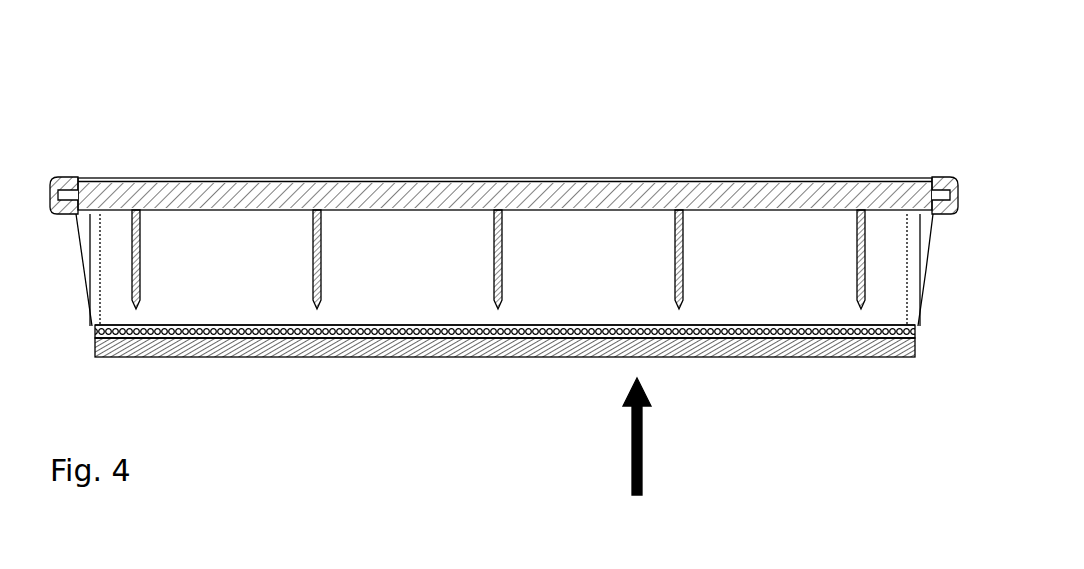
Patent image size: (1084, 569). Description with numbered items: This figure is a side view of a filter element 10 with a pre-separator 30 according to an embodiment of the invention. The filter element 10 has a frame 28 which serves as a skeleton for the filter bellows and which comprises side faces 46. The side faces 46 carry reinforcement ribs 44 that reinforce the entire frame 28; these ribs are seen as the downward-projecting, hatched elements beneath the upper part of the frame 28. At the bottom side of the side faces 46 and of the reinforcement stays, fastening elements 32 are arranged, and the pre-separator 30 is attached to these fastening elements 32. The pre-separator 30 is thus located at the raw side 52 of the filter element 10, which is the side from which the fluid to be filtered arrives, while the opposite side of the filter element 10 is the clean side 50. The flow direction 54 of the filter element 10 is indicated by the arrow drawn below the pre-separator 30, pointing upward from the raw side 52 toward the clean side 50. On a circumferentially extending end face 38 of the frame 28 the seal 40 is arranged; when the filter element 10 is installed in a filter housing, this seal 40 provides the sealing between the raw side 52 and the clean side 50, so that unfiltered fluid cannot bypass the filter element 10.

The filter element 10 is at (272, 106).
The frame 28 is at (612, 255).
The pre-separator 30 is at (440, 346).
The fastening elements 32 is at (360, 336).
The end face 38 is at (73, 166).
The seal 40 is at (53, 213).
The reinforcement ribs 44 is at (677, 250).
The side faces 46 is at (199, 308).
The clean side 50 is at (458, 177).
The raw side 52 is at (548, 340).
The flow direction 54 is at (645, 465).